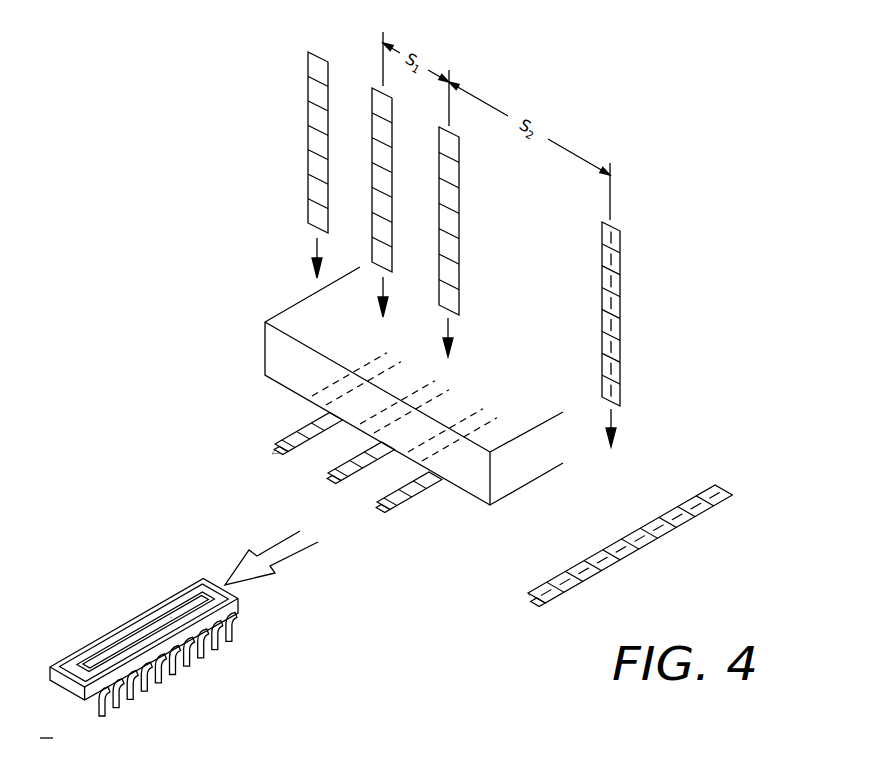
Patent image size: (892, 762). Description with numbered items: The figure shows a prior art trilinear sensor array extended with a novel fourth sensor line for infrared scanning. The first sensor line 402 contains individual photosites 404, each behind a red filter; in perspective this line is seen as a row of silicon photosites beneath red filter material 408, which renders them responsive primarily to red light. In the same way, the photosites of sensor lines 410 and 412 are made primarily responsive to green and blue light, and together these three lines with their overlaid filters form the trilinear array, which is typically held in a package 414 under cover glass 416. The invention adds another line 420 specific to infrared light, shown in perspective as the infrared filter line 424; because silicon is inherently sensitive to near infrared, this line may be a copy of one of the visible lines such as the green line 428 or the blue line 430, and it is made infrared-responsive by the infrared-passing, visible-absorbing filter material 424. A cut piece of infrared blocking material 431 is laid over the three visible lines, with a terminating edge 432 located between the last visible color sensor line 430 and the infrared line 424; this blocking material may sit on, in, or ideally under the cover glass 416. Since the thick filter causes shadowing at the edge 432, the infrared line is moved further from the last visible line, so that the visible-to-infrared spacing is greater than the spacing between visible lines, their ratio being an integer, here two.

The sensor line 402 is at (285, 148).
The individual photosites 404 is at (310, 148).
The sensor line 410 is at (381, 88).
The sensor line 412 is at (452, 128).
The infrared sensor line 420 is at (613, 222).
The infrared blocking material 431 is at (387, 392).
The terminating edge 432 is at (510, 470).
The red filter material 408 is at (285, 433).
The green line 428 is at (355, 482).
The last visible color sensor line 430 is at (418, 503).
The infrared filter material 424 is at (618, 546).
The package 414 is at (176, 634).
The cover glass 416 is at (225, 617).